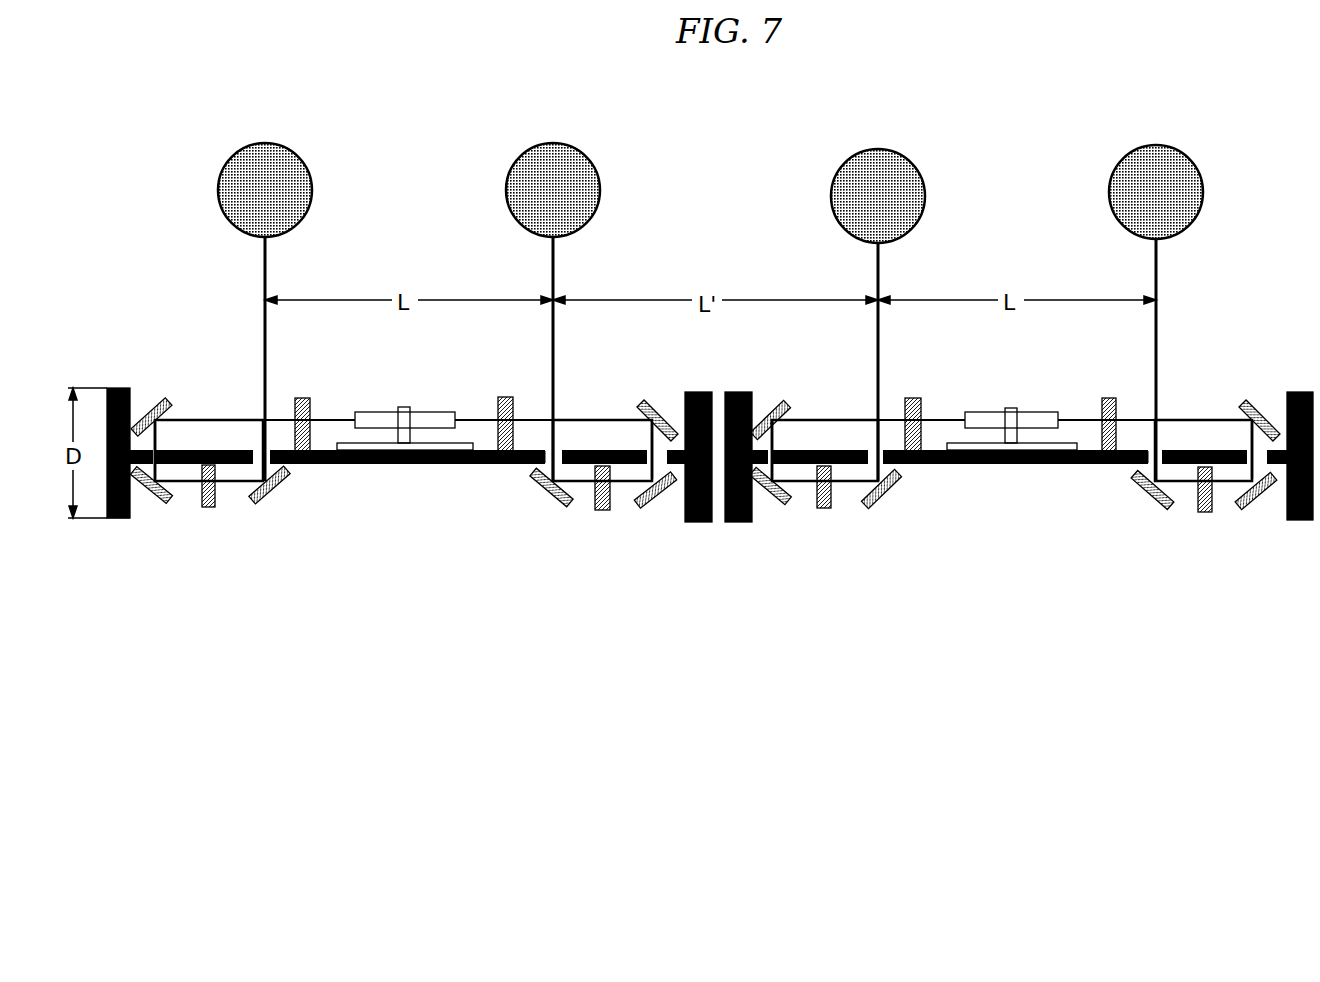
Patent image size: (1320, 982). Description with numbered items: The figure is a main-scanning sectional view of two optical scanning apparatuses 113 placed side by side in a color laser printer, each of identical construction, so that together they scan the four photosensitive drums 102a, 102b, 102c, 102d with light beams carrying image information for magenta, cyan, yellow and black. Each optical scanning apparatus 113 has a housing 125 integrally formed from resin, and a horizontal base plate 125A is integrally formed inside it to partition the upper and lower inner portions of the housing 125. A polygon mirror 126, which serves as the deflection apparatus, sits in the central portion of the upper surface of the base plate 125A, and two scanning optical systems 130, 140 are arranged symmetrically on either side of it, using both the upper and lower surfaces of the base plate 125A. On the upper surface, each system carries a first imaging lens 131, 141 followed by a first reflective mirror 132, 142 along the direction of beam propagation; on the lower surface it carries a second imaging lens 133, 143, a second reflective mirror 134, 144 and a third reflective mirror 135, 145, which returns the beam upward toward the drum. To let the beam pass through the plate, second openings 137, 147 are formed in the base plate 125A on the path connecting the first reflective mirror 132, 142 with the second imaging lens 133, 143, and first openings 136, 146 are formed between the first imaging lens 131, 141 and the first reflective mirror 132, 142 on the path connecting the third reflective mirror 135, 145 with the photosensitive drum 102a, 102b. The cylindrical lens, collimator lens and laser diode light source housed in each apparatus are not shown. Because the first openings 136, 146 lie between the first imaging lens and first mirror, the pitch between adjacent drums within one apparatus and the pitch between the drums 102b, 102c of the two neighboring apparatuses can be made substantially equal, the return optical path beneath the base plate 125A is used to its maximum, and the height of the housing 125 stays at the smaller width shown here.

The photosensitive drum 102a is at (288, 145).
The photosensitive drum 102b is at (578, 144).
The photosensitive drum 102c is at (898, 151).
The photosensitive drum 102d is at (1170, 147).
The optical scanning apparatus 113 is at (492, 553).
The housing 125 is at (115, 520).
The base plate 125A is at (442, 467).
The polygon mirror 126 is at (452, 412).
The scanning optical system 130 is at (227, 370).
The first imaging lens 131 is at (312, 398).
The first reflective mirror 132 is at (162, 400).
The second imaging lens 133 is at (157, 503).
The second reflective mirror 134 is at (208, 510).
The third reflective mirror 135 is at (273, 493).
The first opening 136 is at (260, 450).
The second opening 137 is at (157, 437).
The scanning optical system 140 is at (605, 383).
The first imaging lens 141 is at (809, 395).
The first reflective mirror 142 is at (663, 407).
The second imaging lens 143 is at (655, 503).
The second reflective mirror 144 is at (603, 513).
The third reflective mirror 145 is at (550, 497).
The first opening 146 is at (550, 450).
The second opening 147 is at (657, 460).